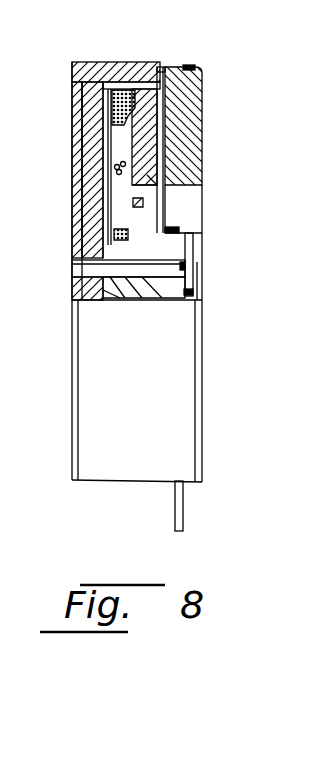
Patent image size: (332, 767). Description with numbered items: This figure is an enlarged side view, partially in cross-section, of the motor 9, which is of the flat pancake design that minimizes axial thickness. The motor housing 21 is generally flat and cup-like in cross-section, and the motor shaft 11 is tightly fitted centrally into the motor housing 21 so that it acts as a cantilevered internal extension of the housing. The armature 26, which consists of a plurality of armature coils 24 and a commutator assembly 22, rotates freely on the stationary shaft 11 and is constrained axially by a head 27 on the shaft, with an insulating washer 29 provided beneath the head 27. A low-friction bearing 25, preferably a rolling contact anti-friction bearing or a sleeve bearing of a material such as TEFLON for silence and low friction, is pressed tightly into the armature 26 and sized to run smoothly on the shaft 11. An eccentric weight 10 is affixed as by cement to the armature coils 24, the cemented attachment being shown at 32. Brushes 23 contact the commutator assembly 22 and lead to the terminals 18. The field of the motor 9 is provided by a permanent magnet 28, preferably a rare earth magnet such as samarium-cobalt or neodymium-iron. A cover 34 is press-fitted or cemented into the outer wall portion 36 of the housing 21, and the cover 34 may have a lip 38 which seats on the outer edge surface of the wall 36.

The motor 9 is at (68, 362).
The weight 10 is at (150, 88).
The motor shaft 11 is at (72, 264).
The terminals 18 is at (185, 508).
The motor housing 21 is at (76, 96).
The commutator assembly 22 is at (193, 246).
The brushes 23 is at (173, 223).
The armature coils 24 is at (112, 187).
The low-friction bearing 25 is at (160, 303).
The armature 26 is at (143, 212).
The head 27 is at (193, 268).
The permanent magnet 28 is at (84, 128).
The washer 29 is at (187, 286).
The cement attachment 32 is at (130, 152).
The cover 34 is at (185, 136).
The outer wall portion 36 is at (165, 67).
The lip 38 is at (182, 66).